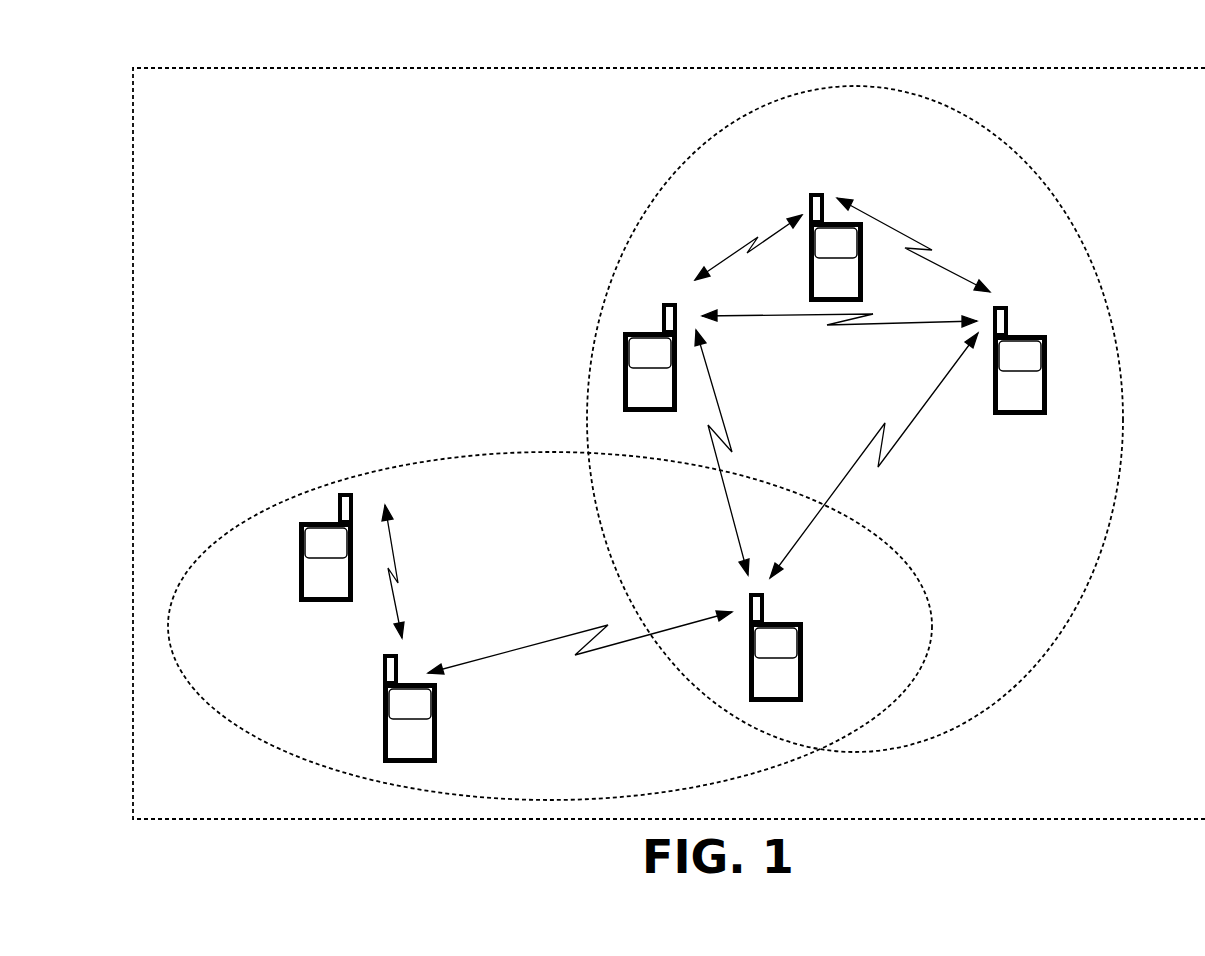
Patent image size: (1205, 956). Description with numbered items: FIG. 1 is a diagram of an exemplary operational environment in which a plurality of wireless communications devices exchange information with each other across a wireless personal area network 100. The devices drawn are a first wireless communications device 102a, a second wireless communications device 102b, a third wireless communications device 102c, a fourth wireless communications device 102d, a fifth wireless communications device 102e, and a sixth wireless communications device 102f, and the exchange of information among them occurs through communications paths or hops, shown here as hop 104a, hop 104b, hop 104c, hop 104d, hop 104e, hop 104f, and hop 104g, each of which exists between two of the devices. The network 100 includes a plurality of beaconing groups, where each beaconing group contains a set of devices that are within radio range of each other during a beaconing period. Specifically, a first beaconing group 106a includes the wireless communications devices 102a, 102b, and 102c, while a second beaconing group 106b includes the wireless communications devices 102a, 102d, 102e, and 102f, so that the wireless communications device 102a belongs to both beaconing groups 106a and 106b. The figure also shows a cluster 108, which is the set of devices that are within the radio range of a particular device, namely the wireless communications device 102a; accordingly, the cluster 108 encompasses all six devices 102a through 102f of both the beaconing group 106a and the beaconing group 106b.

The wireless personal area network 100 is at (1167, 36).
The wireless communications device 102a is at (805, 650).
The wireless communications device 102b is at (355, 510).
The wireless communications device 102c is at (437, 718).
The wireless communications device 102d is at (678, 322).
The wireless communications device 102e is at (827, 200).
The wireless communications device 102f is at (1009, 325).
The hop 104a is at (398, 577).
The hop 104b is at (507, 650).
The hop 104c is at (712, 378).
The hop 104d is at (898, 442).
The hop 104e is at (857, 324).
The hop 104f is at (750, 246).
The hop 104g is at (918, 248).
The beaconing group 106a is at (445, 458).
The beaconing group 106b is at (1077, 233).
The cluster 108 is at (717, 68).